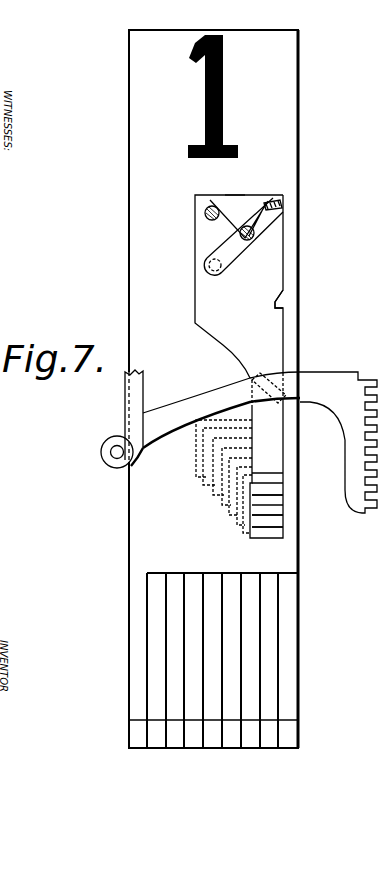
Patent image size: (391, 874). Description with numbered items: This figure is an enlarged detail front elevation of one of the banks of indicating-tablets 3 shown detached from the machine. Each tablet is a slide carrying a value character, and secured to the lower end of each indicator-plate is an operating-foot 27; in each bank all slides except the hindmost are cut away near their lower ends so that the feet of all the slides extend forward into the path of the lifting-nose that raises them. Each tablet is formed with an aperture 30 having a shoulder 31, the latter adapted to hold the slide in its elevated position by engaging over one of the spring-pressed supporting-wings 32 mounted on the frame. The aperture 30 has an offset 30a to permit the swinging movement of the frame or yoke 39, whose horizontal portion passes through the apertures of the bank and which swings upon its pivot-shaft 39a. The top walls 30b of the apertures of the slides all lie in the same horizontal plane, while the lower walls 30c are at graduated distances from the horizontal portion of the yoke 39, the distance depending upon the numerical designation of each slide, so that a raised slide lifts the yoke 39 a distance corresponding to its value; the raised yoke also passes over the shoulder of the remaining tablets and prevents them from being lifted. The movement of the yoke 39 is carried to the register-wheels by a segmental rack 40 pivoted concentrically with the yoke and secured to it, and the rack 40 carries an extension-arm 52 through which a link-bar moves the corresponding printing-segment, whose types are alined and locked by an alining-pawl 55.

The indicating-tablets 3 is at (187, 180).
The operating-foot 27 is at (315, 728).
The aperture 30 is at (265, 328).
The offset 30a is at (250, 505).
The top walls 30b is at (232, 194).
The lower walls 30c is at (280, 518).
The shoulder 31 is at (285, 302).
The spring-pressed supporting-wing 32 is at (283, 205).
The frame or yoke 39 is at (256, 380).
The pivot-shaft 39a is at (106, 460).
The segmental rack 40 is at (338, 442).
The extension-arm 52 is at (160, 364).
The alining-pawl 55 is at (244, 250).